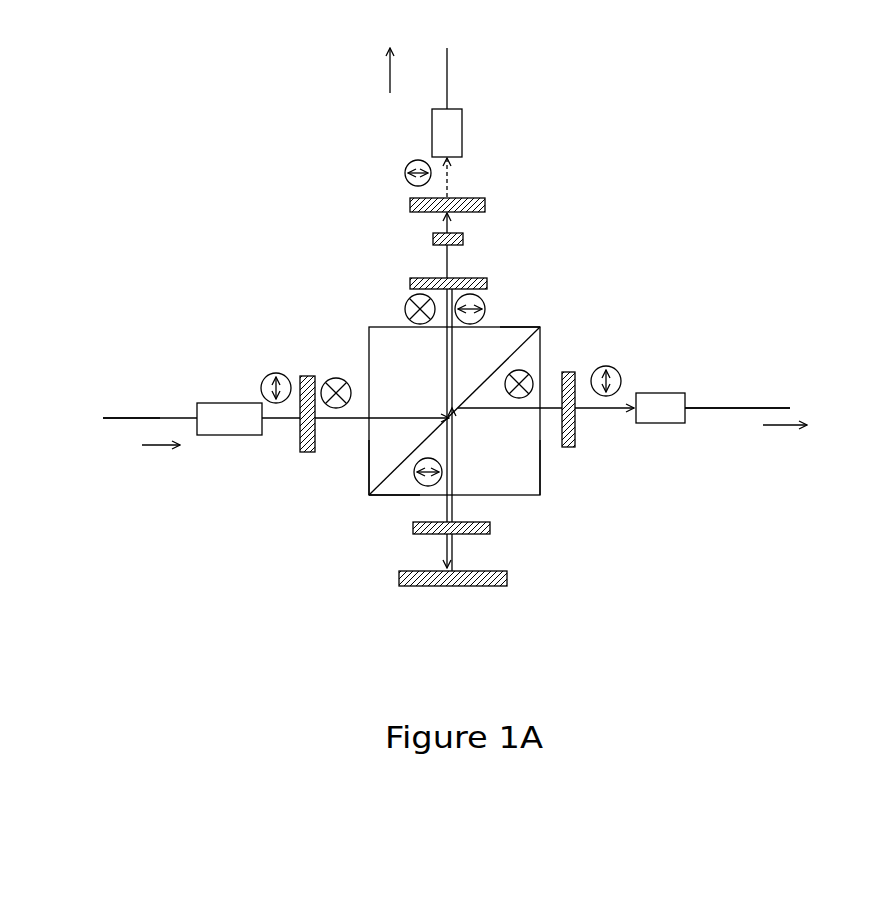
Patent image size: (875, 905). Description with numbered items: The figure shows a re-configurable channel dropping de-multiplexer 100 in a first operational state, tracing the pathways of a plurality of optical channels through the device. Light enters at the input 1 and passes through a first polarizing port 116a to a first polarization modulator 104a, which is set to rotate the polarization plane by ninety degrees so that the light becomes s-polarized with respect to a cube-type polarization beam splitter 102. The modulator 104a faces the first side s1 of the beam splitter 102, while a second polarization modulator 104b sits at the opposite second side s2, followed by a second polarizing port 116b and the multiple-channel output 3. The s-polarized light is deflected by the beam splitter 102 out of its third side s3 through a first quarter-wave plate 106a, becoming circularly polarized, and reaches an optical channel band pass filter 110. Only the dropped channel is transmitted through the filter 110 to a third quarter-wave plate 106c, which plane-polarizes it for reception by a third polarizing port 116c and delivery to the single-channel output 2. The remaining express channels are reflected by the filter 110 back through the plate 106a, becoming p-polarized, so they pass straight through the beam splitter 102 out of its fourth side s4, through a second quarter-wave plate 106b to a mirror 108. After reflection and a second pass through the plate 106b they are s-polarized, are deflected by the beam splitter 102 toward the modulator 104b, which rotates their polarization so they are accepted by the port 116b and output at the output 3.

The re-configurable channel dropping de-multiplexer 100 is at (249, 51).
The input 1 is at (160, 415).
The single-channel output 2 is at (447, 75).
The multiple-channel output 3 is at (733, 408).
The polarization beam splitter 102 is at (369, 327).
The first polarization modulator 104a is at (298, 447).
The second polarization modulator 104b is at (575, 443).
The first quarter-wave plate 106a is at (410, 283).
The second quarter-wave plate 106b is at (490, 528).
The third quarter-wave plate 106c is at (408, 203).
The mirror 108 is at (422, 586).
The optical channel band pass filter 110 is at (463, 239).
The first polarizing port 116a is at (227, 403).
The second polarizing port 116b is at (662, 393).
The third polarizing port 116c is at (485, 133).
The first side s1 is at (366, 468).
The second side s2 is at (544, 462).
The third side s3 is at (528, 324).
The fourth side s4 is at (395, 498).